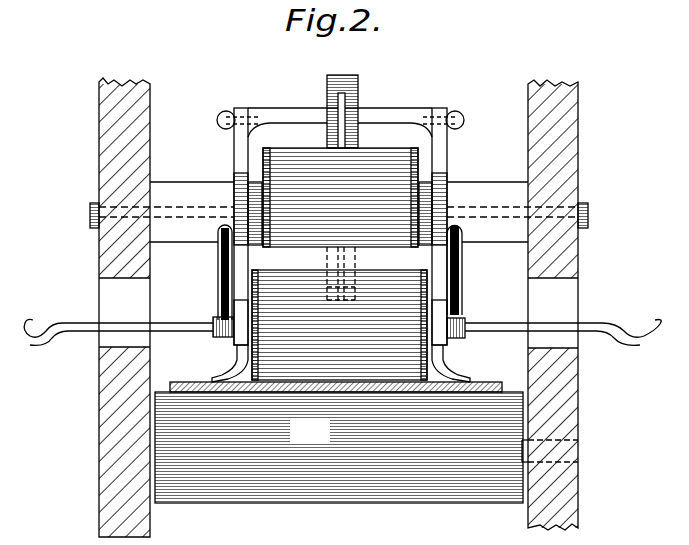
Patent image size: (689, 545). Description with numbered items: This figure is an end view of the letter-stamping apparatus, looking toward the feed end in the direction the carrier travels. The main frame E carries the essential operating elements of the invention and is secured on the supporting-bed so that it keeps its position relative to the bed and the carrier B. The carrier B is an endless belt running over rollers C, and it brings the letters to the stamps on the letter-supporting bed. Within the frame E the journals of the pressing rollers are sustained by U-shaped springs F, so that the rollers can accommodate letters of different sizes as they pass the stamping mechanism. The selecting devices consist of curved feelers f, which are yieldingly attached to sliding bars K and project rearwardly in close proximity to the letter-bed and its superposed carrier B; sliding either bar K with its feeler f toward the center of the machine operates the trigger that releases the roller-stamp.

The main frame E is at (234, 152).
The rollers H is at (255, 262).
The U-shaped spring F is at (219, 278).
The sliding bar K is at (186, 327).
The curved feeler f is at (226, 367).
The carrier B is at (185, 382).
The roller C is at (339, 447).